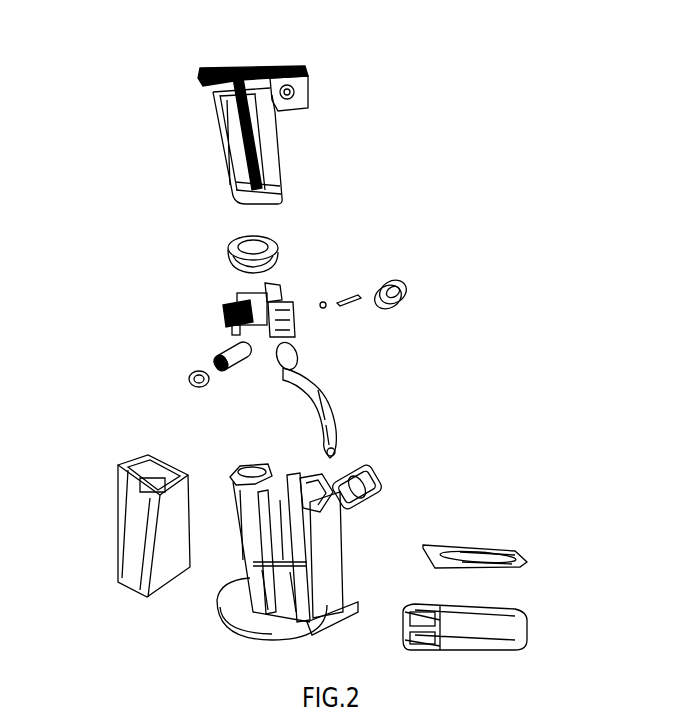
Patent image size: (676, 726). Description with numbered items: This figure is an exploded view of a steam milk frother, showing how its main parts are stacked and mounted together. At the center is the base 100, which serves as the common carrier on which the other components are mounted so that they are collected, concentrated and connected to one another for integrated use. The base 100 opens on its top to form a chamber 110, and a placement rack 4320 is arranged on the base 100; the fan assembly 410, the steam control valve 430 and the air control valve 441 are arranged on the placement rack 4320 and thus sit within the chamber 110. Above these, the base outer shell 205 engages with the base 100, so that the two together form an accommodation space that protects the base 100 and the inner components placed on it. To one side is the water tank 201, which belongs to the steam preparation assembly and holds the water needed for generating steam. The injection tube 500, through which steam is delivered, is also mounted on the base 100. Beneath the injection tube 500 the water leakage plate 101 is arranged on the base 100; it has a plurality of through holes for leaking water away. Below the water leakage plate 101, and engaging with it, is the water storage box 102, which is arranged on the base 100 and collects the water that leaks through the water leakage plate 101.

The base outer shell 205 is at (243, 65).
The fan assembly 410 is at (263, 250).
The air control valve 441 is at (403, 282).
The placement rack 4320 is at (237, 300).
The steam control valve 430 is at (222, 356).
The injection tube 500 is at (328, 412).
The water tank 201 is at (142, 462).
The chamber 110 is at (303, 497).
The base 100 is at (332, 543).
The water leakage plate 101 is at (442, 550).
The water storage box 102 is at (483, 613).